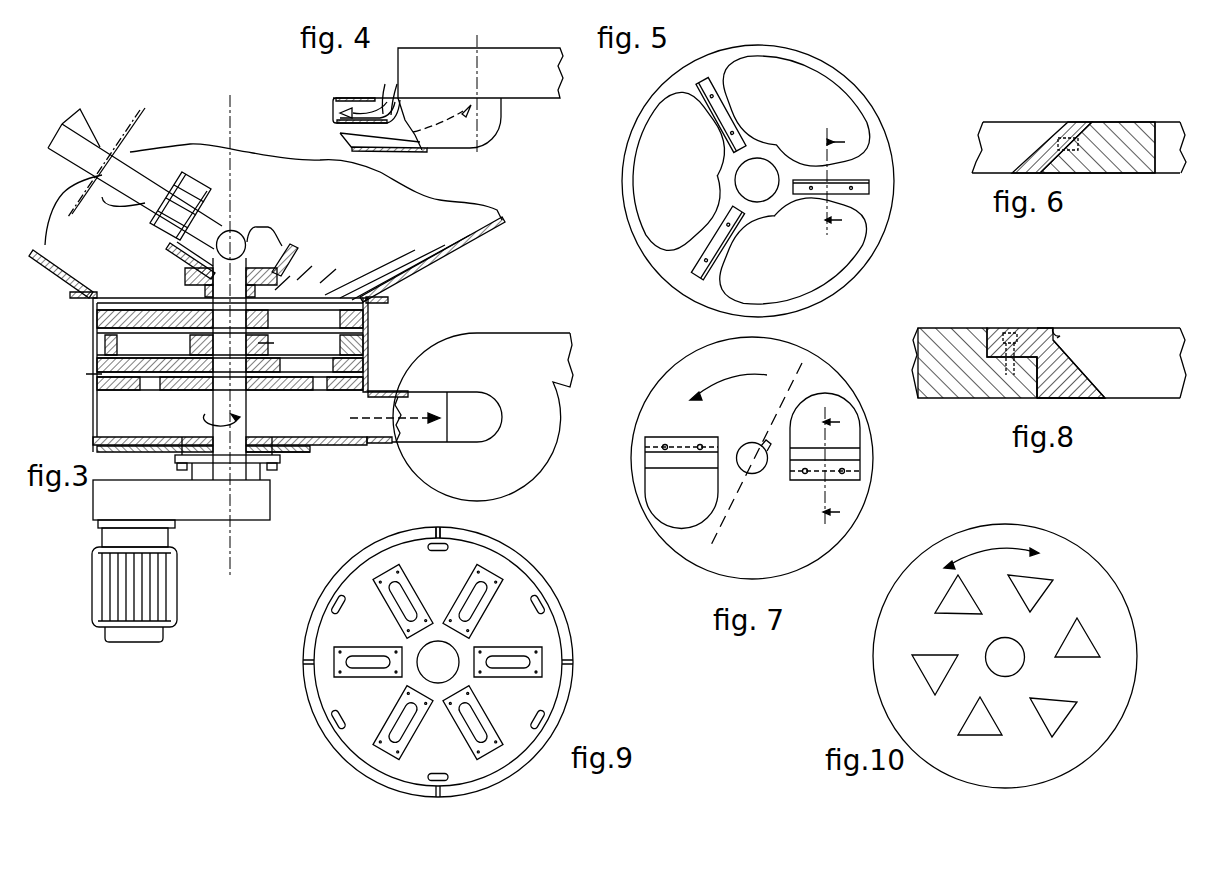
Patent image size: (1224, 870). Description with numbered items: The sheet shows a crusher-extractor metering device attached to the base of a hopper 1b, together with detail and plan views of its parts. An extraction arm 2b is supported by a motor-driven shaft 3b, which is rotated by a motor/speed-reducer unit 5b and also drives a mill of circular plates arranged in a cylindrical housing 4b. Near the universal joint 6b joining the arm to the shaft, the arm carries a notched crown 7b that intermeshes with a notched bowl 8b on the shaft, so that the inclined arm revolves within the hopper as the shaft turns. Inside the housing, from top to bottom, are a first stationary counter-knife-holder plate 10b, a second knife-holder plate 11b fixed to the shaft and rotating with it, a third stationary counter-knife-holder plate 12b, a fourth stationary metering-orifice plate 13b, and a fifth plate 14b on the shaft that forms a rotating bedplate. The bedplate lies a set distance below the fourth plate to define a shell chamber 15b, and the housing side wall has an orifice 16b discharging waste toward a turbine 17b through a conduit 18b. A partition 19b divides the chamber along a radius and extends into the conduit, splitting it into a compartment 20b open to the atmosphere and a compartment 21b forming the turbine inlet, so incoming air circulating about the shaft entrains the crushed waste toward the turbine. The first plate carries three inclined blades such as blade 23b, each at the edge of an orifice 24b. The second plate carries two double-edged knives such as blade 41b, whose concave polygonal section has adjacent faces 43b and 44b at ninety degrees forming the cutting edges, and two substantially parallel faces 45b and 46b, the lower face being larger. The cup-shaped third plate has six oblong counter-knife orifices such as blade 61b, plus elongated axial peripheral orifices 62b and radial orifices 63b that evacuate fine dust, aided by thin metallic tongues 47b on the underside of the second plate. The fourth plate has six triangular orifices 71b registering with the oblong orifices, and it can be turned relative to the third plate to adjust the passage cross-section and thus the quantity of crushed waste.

In FIG. 3, the hopper 1b is at (464, 240).
In FIG. 3, the extraction arm 2b is at (153, 183).
In FIG. 3, the motor-driven shaft 3b is at (272, 228).
In FIG. 3, the cylindrical housing 4b is at (93, 340).
In FIG. 3, the motor/speed-reducer unit 5b is at (203, 519).
In FIG. 3, the universal joint 6b is at (240, 234).
In FIG. 3, the notched crown 7b is at (184, 174).
In FIG. 3, the notched bowl 8b is at (292, 246).
In FIG. 3, the first stationary counter-knife-holder plate 10b is at (118, 310).
In FIG. 5, the first stationary counter-knife-holder plate 10b is at (868, 247).
In FIG. 6, the first stationary counter-knife-holder plate 10b is at (1115, 174).
In FIG. 3, the second knife-holder plate 11b is at (364, 322).
In FIG. 7, the second knife-holder plate 11b is at (818, 555).
In FIG. 8, the second knife-holder plate 11b is at (1049, 363).
In FIG. 3, the third counter-knife-holder plate 12b is at (97, 360).
In FIG. 9, the third counter-knife-holder plate 12b is at (570, 684).
In FIG. 3, the fourth metering-orifice plate 13b is at (108, 388).
In FIG. 10, the fourth metering-orifice plate 13b is at (1133, 673).
In FIG. 3, the fifth plate 14b is at (115, 432).
In FIG. 3, the shell chamber 15b is at (152, 446).
In FIG. 3, the orifice 16b is at (370, 446).
In FIG. 3, the turbine 17b is at (533, 472).
In FIG. 4, the turbine 17b is at (523, 99).
In FIG. 3, the conduit 18b is at (407, 440).
In FIG. 4, the conduit 18b is at (412, 151).
In FIG. 3, the partition 19b is at (297, 430).
In FIG. 4, the partition 19b is at (333, 110).
In FIG. 4, the compartment 20b is at (402, 84).
In FIG. 4, the compartment 21b is at (483, 140).
In FIG. 5, the blade 23b is at (862, 183).
In FIG. 6, the blade 23b is at (1063, 122).
In FIG. 5, the orifice 24b is at (812, 270).
In FIG. 6, the orifice 24b is at (998, 135).
In FIG. 7, the blade 41b is at (850, 458).
In FIG. 8, the blade 41b is at (1036, 400).
In FIG. 8, the face 43b is at (1070, 328).
In FIG. 8, the face 44b is at (1103, 384).
In FIG. 8, the face 45b is at (1053, 330).
In FIG. 8, the face 46b is at (1097, 400).
In FIG. 7, the thin metallic tongue 47b is at (705, 545).
In FIG. 9, the blade 61b is at (520, 655).
In FIG. 9, the axial peripheral orifice 62b is at (532, 603).
In FIG. 9, the radial orifice 63b is at (450, 533).
In FIG. 10, the triangular orifice 71b is at (1078, 640).